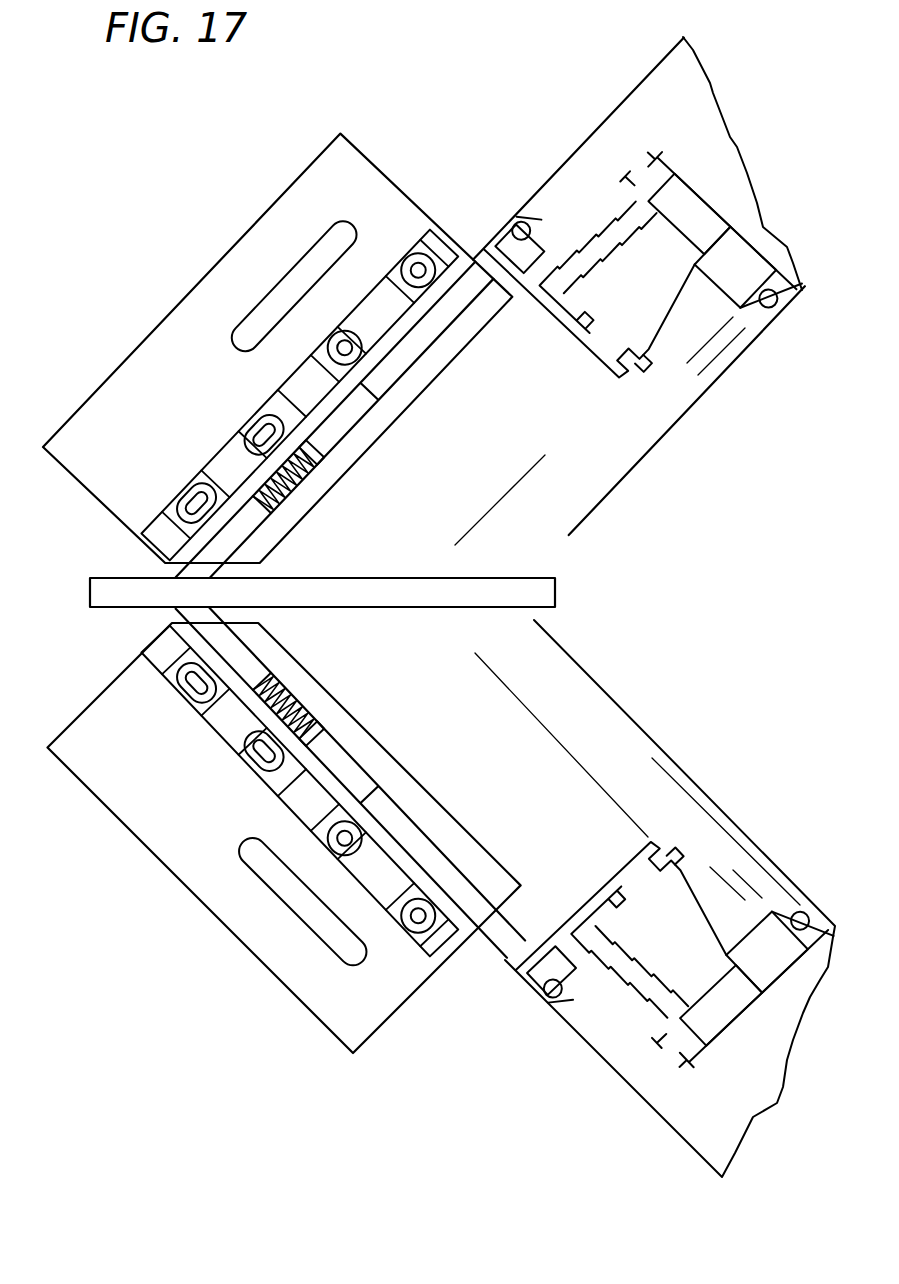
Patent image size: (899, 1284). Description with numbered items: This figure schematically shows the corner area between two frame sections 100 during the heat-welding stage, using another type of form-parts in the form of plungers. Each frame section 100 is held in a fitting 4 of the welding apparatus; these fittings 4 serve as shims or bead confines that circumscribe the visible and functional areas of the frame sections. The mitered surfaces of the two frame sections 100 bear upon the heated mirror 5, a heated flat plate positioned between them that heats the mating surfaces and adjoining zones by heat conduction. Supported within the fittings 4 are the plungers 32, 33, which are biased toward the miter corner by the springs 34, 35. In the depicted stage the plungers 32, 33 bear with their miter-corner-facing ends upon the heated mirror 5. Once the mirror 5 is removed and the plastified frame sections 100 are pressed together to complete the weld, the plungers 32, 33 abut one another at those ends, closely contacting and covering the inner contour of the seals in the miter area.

The fittings 4 is at (353, 177).
The heated mirror 5 is at (546, 588).
The plunger 32 is at (225, 545).
The plunger 33 is at (217, 639).
The spring 34 is at (298, 486).
The spring 35 is at (300, 700).
The frame sections 100 is at (620, 127).